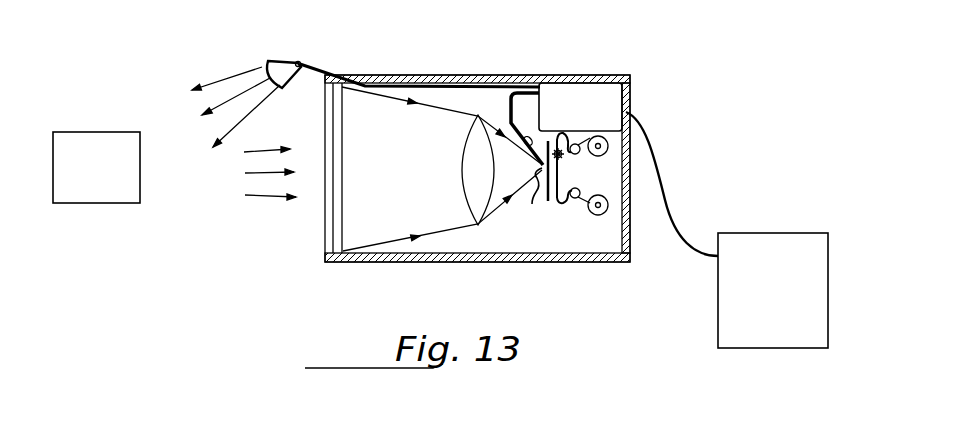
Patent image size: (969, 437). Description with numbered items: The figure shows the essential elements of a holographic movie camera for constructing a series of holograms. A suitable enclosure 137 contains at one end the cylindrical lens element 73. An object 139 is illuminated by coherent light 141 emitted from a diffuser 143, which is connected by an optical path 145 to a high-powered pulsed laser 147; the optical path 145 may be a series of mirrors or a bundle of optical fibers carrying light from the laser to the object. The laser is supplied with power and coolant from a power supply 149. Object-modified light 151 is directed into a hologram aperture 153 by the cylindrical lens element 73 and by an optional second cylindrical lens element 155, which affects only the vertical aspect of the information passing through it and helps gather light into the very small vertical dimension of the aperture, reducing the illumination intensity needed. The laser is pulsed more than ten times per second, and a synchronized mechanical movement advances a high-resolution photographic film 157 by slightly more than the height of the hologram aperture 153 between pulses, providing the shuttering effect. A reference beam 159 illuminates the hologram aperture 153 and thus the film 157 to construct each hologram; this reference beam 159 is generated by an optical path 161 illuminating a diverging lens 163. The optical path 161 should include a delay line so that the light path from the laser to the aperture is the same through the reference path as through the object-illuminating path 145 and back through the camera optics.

The cylindrical lens element 73 is at (327, 116).
The enclosure 137 is at (461, 75).
The object 139 is at (93, 143).
The coherent light 141 is at (220, 87).
The diffuser 143 is at (282, 67).
The optical path 145 is at (323, 65).
The high-powered pulsed laser 147 is at (614, 86).
The power supply 149 is at (748, 243).
The object-modified light 151 is at (266, 183).
The hologram aperture 153 is at (522, 196).
The second cylindrical lens element 155 is at (470, 181).
The high-resolution photographic film 157 is at (555, 183).
The reference beam 159 is at (537, 155).
The optical path 161 is at (511, 98).
The diverging lens 163 is at (527, 137).